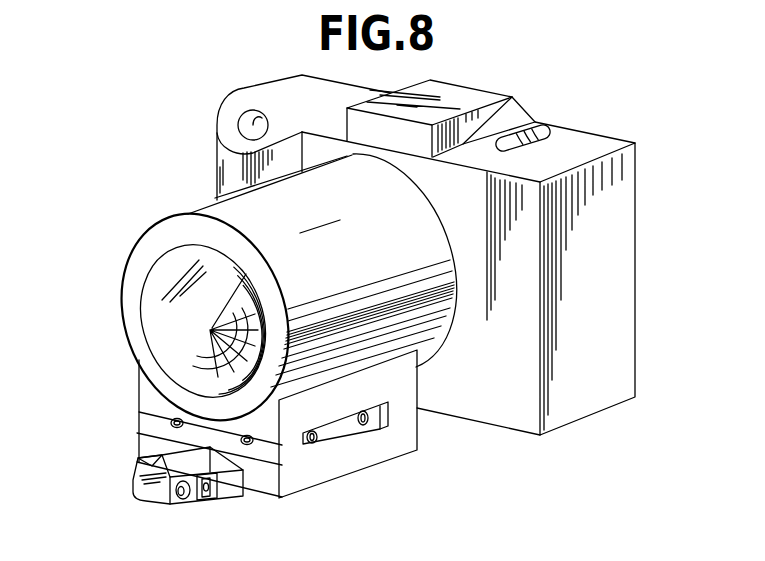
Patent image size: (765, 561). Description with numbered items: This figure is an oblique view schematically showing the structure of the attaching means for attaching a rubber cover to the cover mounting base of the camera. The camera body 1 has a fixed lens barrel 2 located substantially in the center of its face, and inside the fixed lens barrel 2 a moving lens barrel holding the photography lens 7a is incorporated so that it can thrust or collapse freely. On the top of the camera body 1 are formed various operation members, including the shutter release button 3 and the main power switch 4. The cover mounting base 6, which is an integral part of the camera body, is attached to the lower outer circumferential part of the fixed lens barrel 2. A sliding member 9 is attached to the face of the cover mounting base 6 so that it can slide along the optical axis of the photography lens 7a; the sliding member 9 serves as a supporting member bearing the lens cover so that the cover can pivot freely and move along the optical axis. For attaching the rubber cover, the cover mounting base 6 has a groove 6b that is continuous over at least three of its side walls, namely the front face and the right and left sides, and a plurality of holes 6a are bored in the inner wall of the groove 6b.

The camera body 1 is at (594, 357).
The fixed lens barrel 2 is at (418, 253).
The shutter release button 3 is at (242, 113).
The main power switch 4 is at (540, 136).
The cover mounting base 6 is at (403, 433).
The holes 6a is at (318, 440).
The groove 6b is at (297, 440).
The photography lens 7a is at (168, 312).
The sliding member 9 is at (132, 482).